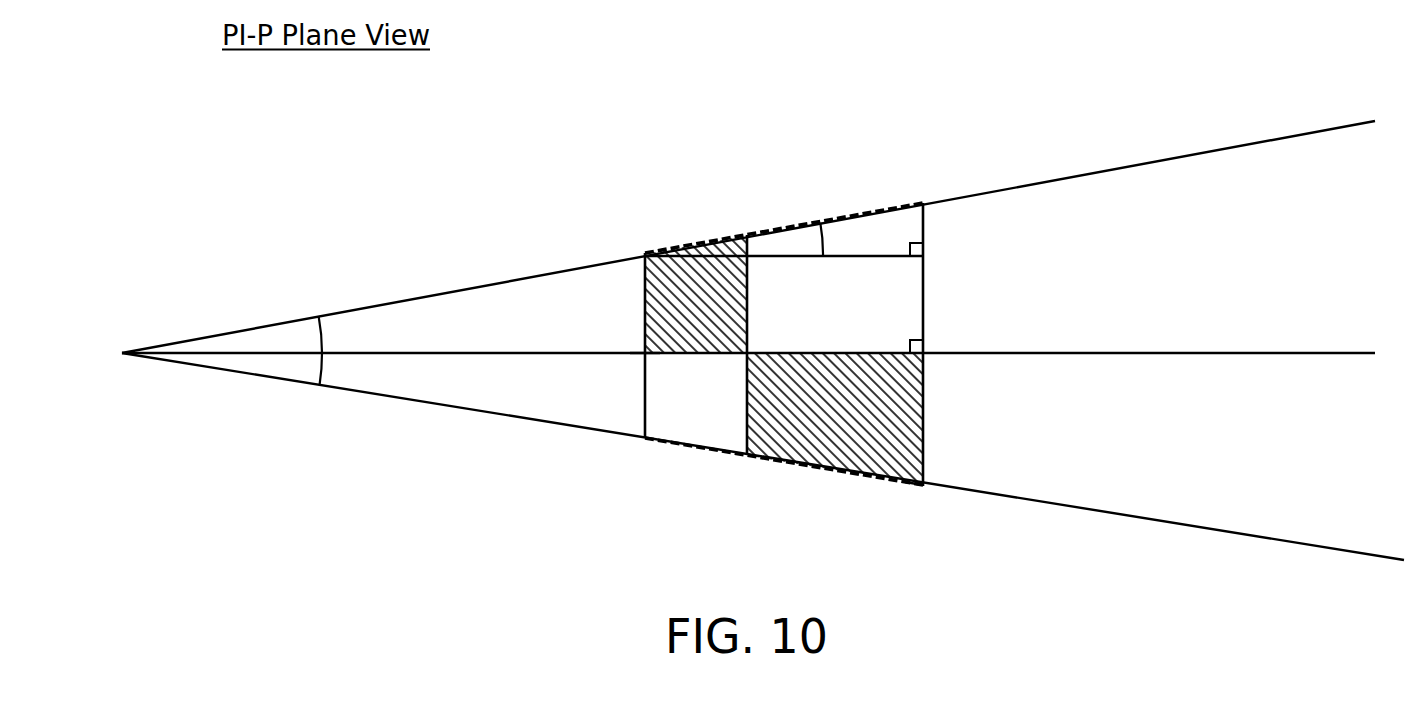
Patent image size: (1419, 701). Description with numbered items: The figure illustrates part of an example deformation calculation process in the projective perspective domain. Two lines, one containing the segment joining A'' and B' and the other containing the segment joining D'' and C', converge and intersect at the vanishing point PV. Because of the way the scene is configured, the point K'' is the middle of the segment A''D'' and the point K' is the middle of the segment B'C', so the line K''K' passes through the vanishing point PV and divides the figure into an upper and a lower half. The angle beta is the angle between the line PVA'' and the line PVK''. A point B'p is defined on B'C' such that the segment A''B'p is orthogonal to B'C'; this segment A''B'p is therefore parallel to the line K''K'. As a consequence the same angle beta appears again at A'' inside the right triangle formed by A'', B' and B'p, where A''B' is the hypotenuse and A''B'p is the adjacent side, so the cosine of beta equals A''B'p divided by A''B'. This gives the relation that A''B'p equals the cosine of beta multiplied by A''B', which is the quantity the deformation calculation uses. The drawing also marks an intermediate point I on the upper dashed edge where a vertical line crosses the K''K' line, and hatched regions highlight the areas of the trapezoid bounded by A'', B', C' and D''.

The vanishing point PV is at (743, 340).
The point A" A'' is at (779, 323).
The point B' is at (799, 319).
The point B'p is at (954, 248).
The point C' is at (935, 507).
The point D" D'' is at (779, 462).
The intersection point I is at (744, 319).
The point K' is at (945, 330).
The point K" K'' is at (625, 331).